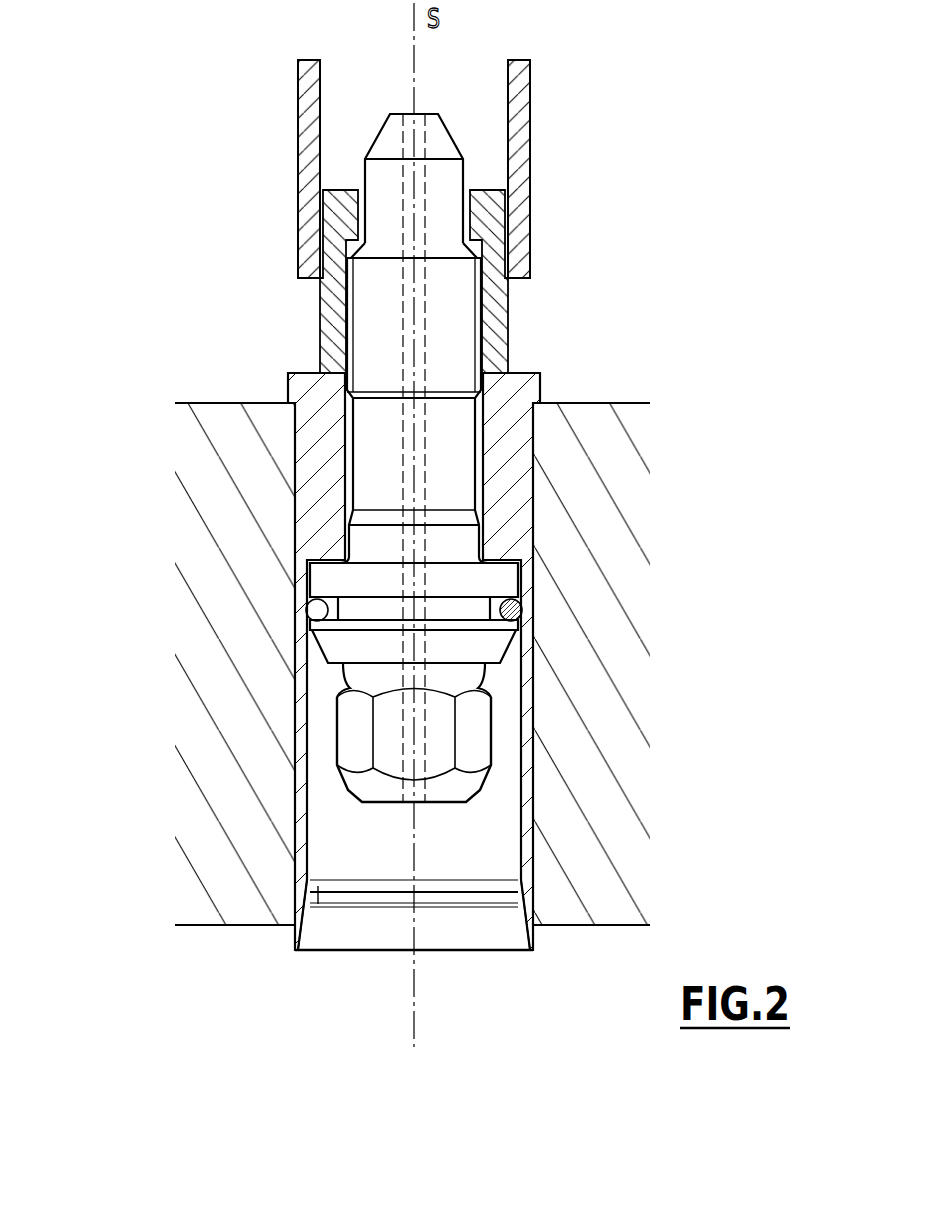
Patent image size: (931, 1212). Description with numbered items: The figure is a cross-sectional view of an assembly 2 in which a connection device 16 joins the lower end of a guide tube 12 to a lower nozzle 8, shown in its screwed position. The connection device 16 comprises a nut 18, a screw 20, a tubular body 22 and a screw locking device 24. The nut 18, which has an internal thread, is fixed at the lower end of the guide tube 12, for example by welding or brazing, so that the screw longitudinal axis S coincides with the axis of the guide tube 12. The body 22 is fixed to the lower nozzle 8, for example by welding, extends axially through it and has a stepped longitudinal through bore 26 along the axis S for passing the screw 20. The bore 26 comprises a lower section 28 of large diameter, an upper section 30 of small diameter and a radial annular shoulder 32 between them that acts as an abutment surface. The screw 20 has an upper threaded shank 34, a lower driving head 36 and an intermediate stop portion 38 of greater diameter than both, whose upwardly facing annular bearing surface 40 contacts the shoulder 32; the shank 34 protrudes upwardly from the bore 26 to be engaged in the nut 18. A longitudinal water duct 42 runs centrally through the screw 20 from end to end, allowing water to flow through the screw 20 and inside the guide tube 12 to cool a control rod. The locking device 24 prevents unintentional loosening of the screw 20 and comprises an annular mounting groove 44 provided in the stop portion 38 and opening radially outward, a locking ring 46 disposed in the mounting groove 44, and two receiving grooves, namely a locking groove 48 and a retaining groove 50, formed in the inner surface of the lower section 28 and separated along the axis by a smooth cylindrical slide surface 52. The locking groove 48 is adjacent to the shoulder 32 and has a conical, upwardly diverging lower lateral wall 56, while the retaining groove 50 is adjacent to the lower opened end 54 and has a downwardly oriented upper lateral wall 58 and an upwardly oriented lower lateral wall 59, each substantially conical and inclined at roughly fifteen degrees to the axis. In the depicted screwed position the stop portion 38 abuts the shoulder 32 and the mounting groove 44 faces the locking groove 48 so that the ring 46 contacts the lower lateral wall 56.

The assembly 2 is at (660, 165).
The lower nozzle 8 is at (652, 388).
The guide tube 12 is at (531, 123).
The connection device 16 is at (198, 298).
The nut 18 is at (531, 296).
The screw 20 is at (498, 333).
The tubular body 22 is at (545, 456).
The screw locking device 24 is at (286, 622).
The longitudinal through bore 26 is at (377, 948).
The lower section 28 is at (330, 847).
The upper section 30 is at (345, 468).
The radial annular shoulder 32 is at (518, 583).
The upper threaded shank 34 is at (452, 205).
The lower driving head 36 is at (480, 738).
The intermediate stop portion 38 is at (515, 650).
The annular bearing surface 40 is at (322, 555).
The longitudinal water duct 42 is at (425, 135).
The annular mounting groove 44 is at (500, 688).
The locking ring 46 is at (522, 612).
The locking groove 48 is at (305, 577).
The retaining groove 50 is at (306, 894).
The smooth cylindrical slide surface 52 is at (515, 800).
The lower opened end 54 is at (490, 953).
The lower lateral wall 56 is at (310, 665).
The upper lateral wall 58 is at (318, 903).
The lower lateral wall 59 is at (360, 903).